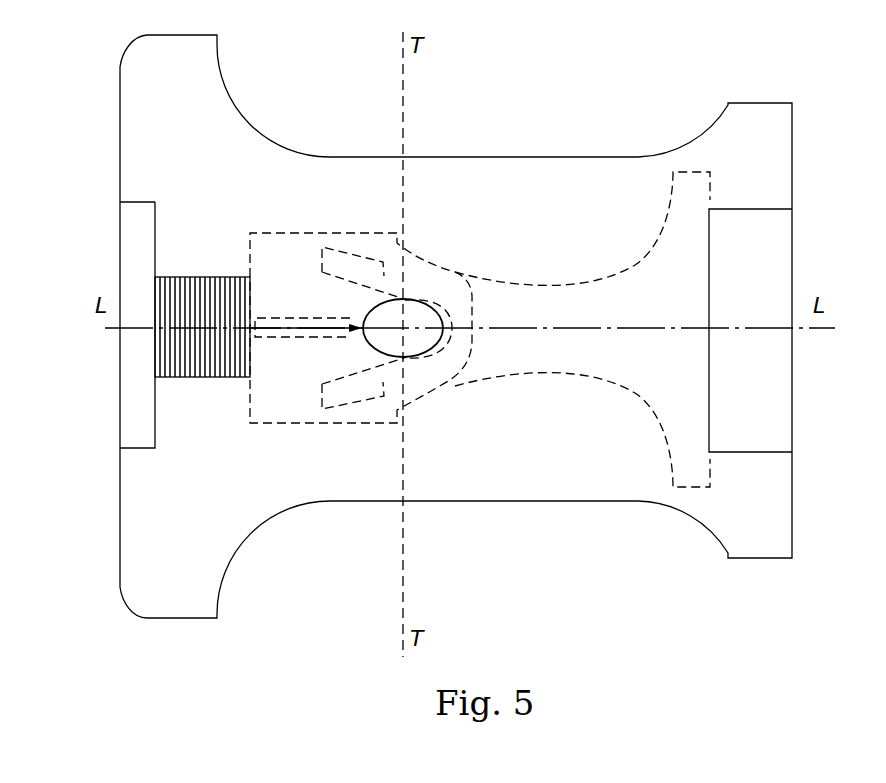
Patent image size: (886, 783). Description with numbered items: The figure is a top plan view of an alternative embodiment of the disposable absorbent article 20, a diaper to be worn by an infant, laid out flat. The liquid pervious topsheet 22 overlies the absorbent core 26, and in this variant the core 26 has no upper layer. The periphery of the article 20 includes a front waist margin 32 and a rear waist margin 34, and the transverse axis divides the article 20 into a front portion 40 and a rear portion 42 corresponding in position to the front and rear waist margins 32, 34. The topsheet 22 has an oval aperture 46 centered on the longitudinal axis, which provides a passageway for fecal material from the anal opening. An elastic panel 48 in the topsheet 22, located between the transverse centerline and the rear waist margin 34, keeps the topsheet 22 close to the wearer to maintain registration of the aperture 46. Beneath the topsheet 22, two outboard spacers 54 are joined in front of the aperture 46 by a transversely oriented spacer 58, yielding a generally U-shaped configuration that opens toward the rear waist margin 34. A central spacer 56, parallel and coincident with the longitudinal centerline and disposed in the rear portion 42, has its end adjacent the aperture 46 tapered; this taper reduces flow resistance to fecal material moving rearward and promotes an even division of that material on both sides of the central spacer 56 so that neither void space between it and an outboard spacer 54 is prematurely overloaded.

The disposable absorbent article 20 is at (418, 367).
The liquid pervious topsheet 22 is at (456, 326).
The absorbent core 26 is at (690, 196).
The front waist margin 32 is at (755, 272).
The rear waist margin 34 is at (133, 247).
The front portion 40 is at (625, 470).
The rear portion 42 is at (283, 465).
The aperture 46 is at (425, 315).
The elastic panel 48 is at (193, 342).
The outboard spacers 54 is at (383, 263).
The central spacer 56 is at (297, 337).
The transverse spacer 58 is at (463, 338).